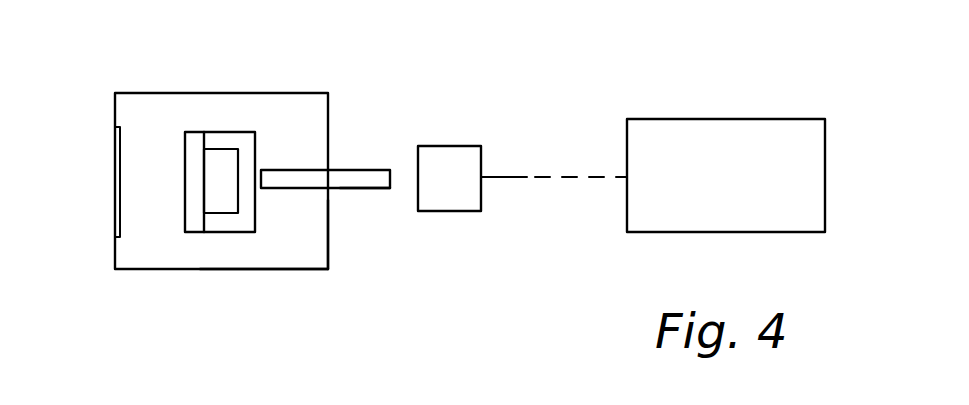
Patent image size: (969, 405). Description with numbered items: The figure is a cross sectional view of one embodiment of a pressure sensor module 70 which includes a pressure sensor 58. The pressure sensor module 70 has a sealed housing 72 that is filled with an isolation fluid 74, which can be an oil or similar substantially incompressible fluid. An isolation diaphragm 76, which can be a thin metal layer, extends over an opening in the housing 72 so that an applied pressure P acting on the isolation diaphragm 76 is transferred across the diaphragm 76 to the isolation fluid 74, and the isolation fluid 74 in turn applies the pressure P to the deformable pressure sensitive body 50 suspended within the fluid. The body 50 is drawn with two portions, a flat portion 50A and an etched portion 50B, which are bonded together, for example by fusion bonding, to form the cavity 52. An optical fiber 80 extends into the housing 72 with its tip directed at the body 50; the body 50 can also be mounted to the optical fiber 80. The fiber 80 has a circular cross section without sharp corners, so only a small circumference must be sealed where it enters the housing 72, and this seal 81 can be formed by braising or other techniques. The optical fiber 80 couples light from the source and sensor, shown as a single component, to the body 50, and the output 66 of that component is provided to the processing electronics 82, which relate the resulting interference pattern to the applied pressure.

The pressure sensor module 70 is at (215, 158).
The sealed housing 72 is at (325, 92).
The isolation fluid 74 is at (317, 236).
The pressure sensor 58 is at (279, 247).
The isolation diaphragm 76 is at (113, 222).
The body 50 is at (151, 160).
The flat portion 50A is at (192, 155).
The etched portion 50B is at (230, 133).
The cavity 52 is at (229, 199).
The seal 81 is at (332, 169).
The optical fiber 80 is at (380, 188).
The output 66 is at (503, 177).
The processing electronics 82 is at (697, 119).
The applied pressure P is at (100, 173).